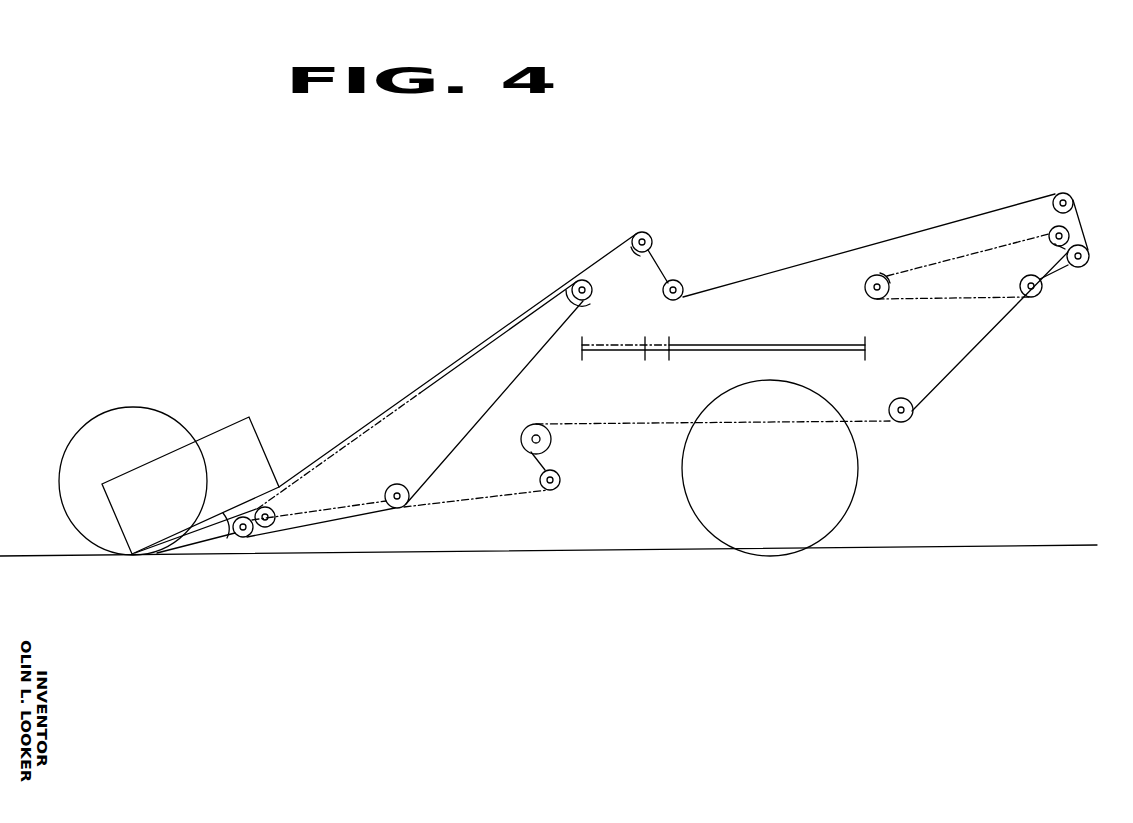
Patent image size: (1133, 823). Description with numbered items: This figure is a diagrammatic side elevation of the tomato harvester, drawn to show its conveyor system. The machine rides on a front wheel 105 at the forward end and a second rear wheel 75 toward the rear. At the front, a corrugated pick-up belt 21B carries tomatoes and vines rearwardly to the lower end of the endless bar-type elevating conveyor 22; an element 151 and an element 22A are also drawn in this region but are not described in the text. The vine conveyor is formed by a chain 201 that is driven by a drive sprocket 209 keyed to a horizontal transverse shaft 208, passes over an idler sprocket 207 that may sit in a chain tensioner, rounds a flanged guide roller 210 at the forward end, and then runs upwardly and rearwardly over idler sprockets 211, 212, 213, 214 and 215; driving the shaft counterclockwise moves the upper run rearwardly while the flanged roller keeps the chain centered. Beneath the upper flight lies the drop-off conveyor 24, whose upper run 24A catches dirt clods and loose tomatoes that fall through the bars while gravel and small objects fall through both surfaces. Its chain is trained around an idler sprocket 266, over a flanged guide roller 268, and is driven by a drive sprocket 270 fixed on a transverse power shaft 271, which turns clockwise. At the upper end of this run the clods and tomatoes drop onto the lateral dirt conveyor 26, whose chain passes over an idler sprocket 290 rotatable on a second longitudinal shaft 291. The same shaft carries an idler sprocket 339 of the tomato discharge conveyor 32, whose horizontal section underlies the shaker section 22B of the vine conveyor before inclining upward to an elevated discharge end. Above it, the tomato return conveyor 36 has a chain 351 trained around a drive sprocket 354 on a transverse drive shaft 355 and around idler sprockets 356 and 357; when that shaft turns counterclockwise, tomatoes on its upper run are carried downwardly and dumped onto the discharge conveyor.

The front wheel 105 is at (128, 407).
The pick-up belt 21B is at (112, 531).
The wrapping sheet 151 is at (211, 535).
The guide roller 210 is at (252, 535).
The guide roller 268 is at (272, 509).
The idler sprocket 266 is at (390, 490).
The elevating conveyor 22 is at (502, 320).
The drop-off conveyor 24 is at (353, 456).
The upper run of drop-off conveyor 24A is at (418, 396).
The upper end roller of inclined conveyor 22A is at (644, 232).
The idler sprocket 211 is at (660, 254).
The idler sprocket 212 is at (670, 281).
The transverse power shaft 271 is at (592, 290).
The drive sprocket 270 is at (600, 303).
The idler sprocket 290 is at (580, 337).
The dirt conveyor 26 is at (615, 358).
The tomato discharge conveyor 32 is at (786, 341).
The second longitudinal shaft 291 is at (742, 352).
The idler sprocket 339 is at (670, 337).
The shaker section 22B is at (873, 246).
The tomato return conveyor 36 is at (943, 250).
The idler sprocket 213 is at (1050, 207).
The drive sprocket 354 is at (888, 276).
The transverse drive shaft 355 is at (866, 287).
The idler sprocket 357 is at (1052, 247).
The idler sprocket 214 is at (1070, 270).
The idler sprocket 356 is at (1015, 296).
The chain 351 is at (988, 297).
The chain 201 is at (978, 346).
The idler sprocket 215 is at (935, 400).
The second rear wheel 75 is at (858, 483).
The horizontal transverse shaft 208 is at (546, 439).
The drive sprocket 209 is at (551, 448).
The idler sprocket 207 is at (560, 486).